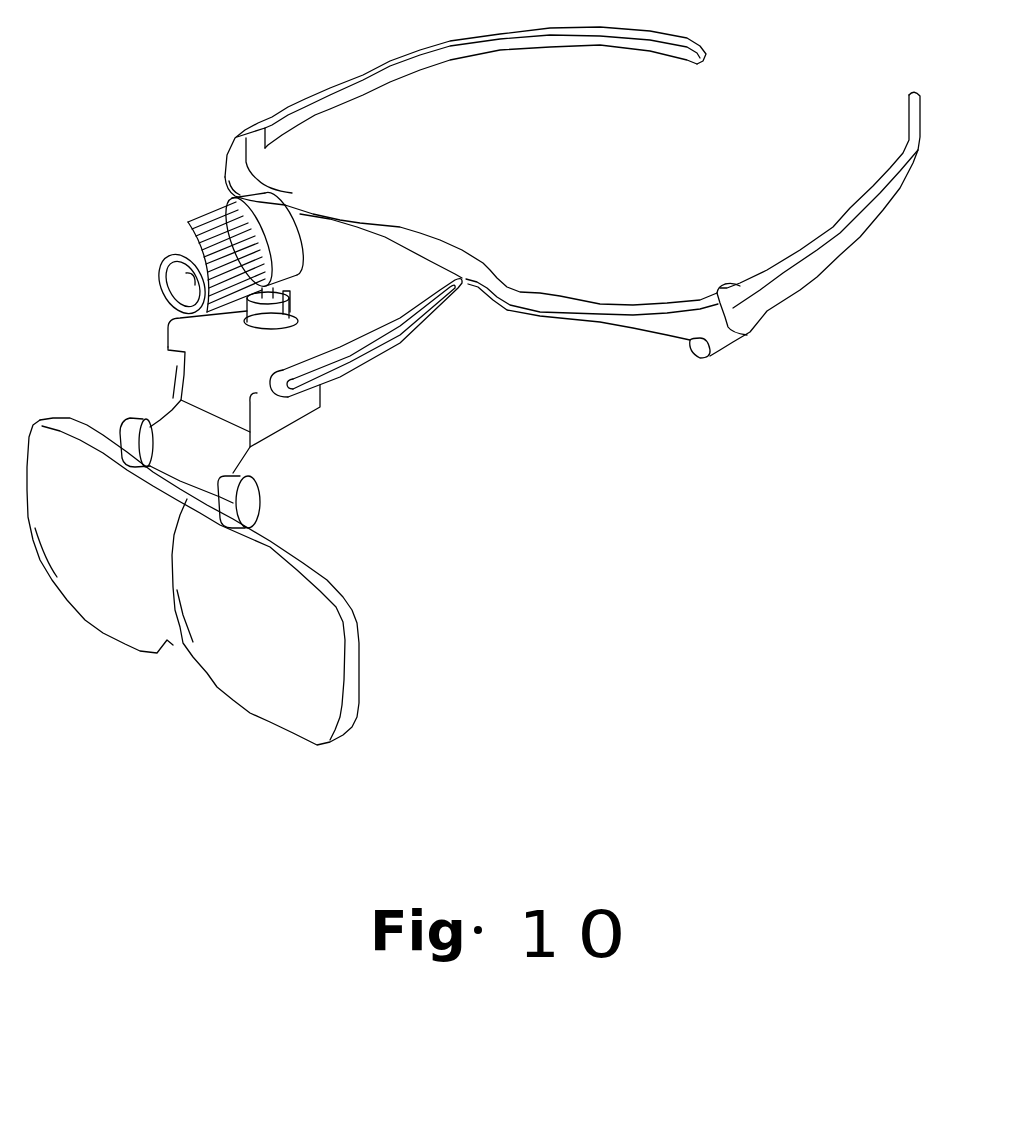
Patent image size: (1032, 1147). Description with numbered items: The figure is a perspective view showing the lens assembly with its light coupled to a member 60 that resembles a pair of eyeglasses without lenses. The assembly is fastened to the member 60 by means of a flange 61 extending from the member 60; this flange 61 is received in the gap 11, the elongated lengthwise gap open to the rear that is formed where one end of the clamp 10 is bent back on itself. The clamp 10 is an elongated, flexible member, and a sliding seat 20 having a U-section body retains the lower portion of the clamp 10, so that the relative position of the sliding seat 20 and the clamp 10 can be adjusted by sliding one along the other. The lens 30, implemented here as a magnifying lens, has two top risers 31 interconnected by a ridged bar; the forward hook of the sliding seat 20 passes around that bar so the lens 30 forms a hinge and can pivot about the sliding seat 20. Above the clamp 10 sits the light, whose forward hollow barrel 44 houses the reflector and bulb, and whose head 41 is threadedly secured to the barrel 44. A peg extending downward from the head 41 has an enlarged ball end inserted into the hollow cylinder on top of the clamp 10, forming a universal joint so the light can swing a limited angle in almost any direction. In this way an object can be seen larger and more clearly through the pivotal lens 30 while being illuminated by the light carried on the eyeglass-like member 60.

The clamp 10 is at (200, 388).
The gap 11 is at (320, 370).
The sliding seat 20 is at (320, 405).
The lens 30 is at (242, 653).
The risers 31 is at (250, 500).
The head 41 is at (252, 208).
The barrel 44 is at (197, 249).
The member 60 is at (757, 313).
The flange 61 is at (423, 313).